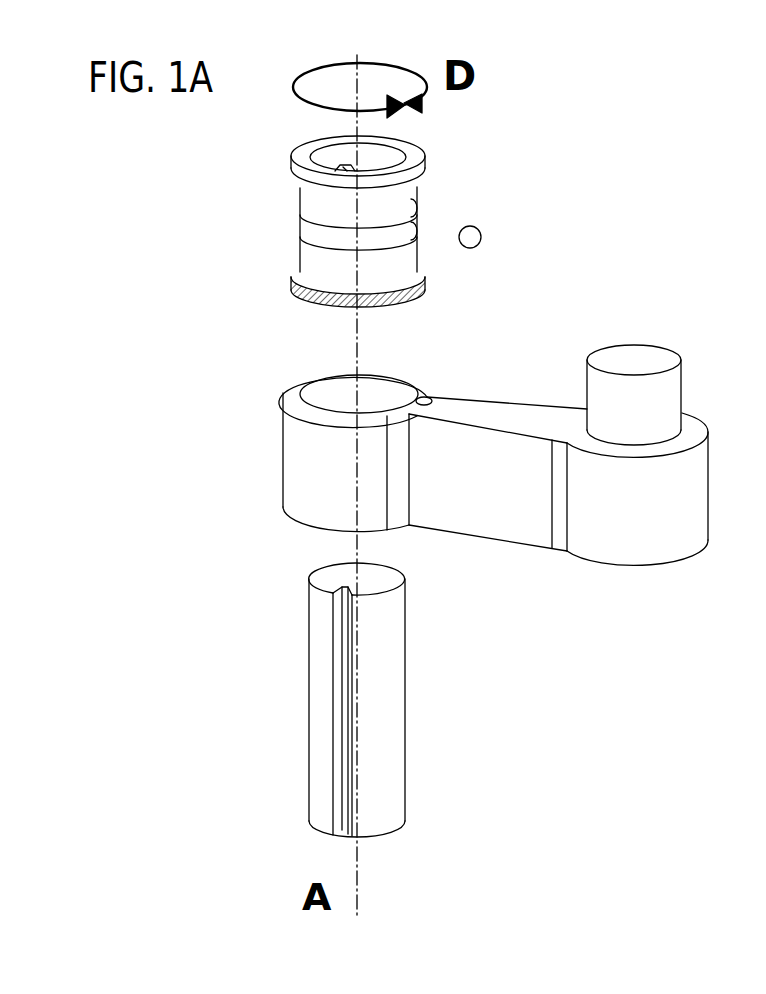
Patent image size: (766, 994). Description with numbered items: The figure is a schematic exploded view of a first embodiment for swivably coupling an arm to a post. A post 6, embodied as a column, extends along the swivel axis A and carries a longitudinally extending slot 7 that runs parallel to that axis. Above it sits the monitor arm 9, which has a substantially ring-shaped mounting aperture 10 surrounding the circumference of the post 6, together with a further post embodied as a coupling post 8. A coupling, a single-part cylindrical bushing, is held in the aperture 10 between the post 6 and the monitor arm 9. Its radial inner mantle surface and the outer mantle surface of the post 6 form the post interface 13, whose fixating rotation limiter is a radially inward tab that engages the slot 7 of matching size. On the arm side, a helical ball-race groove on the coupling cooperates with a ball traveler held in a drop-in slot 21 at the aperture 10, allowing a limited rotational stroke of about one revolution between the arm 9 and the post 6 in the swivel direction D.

The post 6 is at (310, 710).
The slot 7 is at (337, 645).
The coupling post 8 is at (652, 395).
The monitor arm 9 is at (335, 460).
The mounting aperture 10 is at (342, 393).
The post interface 13 is at (373, 150).
The drop-in slot 21 is at (427, 400).